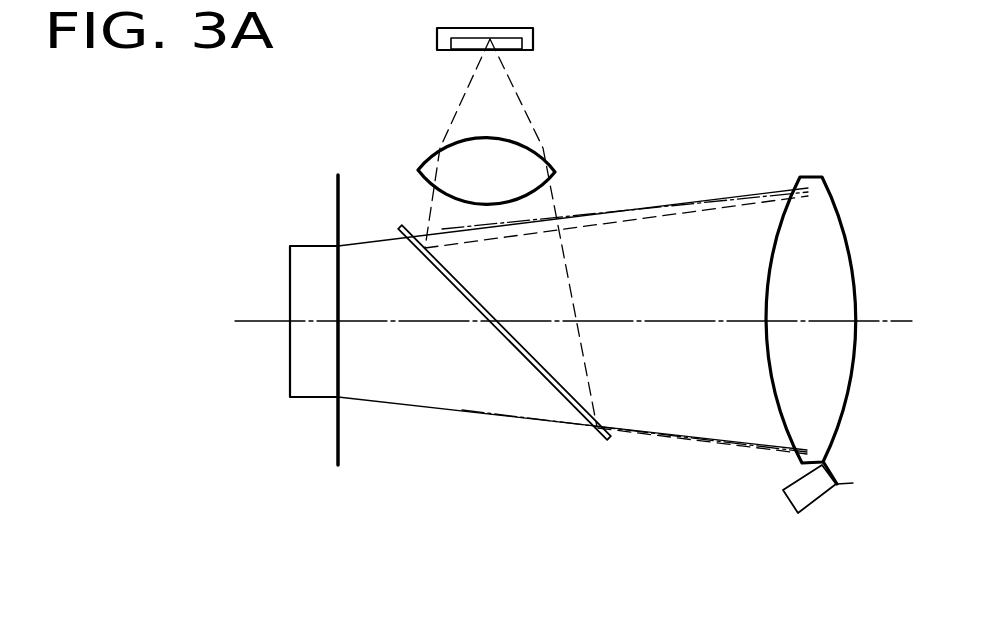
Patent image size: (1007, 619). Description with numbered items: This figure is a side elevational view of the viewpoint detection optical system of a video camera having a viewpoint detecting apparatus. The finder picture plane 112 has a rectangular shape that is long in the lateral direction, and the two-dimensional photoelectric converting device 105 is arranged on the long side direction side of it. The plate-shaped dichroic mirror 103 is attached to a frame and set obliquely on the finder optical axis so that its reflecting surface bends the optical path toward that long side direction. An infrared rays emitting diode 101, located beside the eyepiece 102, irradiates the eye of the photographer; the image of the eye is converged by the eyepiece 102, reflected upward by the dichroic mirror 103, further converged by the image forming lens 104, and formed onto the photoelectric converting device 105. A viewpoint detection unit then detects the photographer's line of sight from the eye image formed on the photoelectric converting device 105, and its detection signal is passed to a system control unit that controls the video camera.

The infrared rays emitting diode 101 is at (810, 490).
The eyepiece 102 is at (823, 178).
The dichroic mirror 103 is at (597, 433).
The image forming lens 104 is at (552, 160).
The 2-dimensional photoelectric converting device 105 is at (530, 50).
The finder picture plane 112 is at (340, 373).